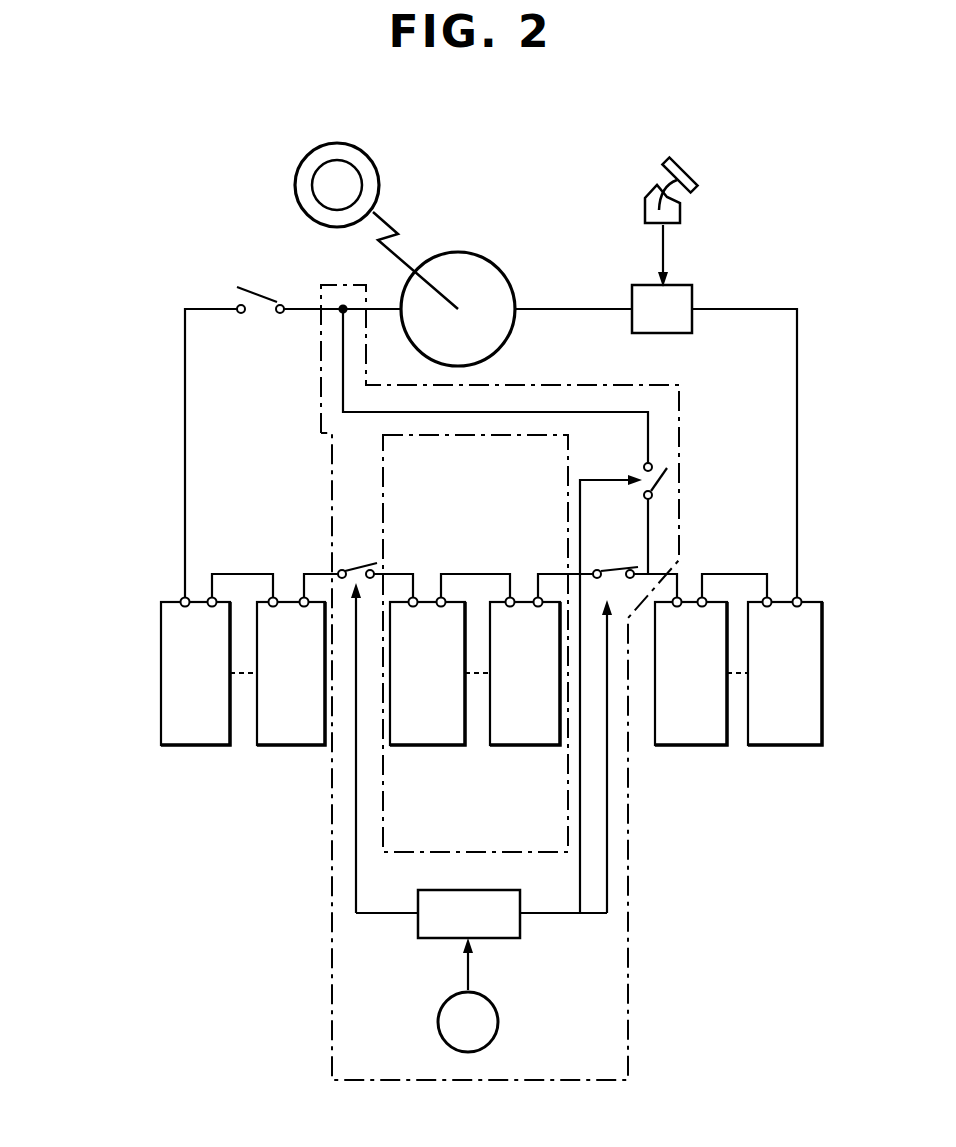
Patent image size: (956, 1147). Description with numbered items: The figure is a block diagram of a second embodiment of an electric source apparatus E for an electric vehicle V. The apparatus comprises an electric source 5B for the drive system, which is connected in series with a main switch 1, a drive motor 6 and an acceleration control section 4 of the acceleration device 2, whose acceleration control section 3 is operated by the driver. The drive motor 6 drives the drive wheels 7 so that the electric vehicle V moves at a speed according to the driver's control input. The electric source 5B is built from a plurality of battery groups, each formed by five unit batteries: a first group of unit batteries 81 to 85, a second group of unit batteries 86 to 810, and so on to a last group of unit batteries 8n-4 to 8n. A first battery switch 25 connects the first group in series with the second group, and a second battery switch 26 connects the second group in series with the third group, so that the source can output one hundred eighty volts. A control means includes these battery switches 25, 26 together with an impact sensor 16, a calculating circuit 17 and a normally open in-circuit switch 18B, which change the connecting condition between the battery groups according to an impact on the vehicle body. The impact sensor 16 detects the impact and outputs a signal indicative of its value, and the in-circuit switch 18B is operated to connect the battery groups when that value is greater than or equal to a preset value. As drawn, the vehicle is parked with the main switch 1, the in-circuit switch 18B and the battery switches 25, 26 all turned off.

The main switch 1 is at (263, 309).
The acceleration device 2 is at (748, 207).
The acceleration control section 3 is at (680, 218).
The acceleration control section 4 is at (692, 296).
The drive motor 6 is at (484, 252).
The drive wheels 7 is at (339, 143).
The electric vehicle V is at (190, 234).
The electric source apparatus E is at (158, 414).
The electric source 5B is at (150, 608).
The first battery switch 25 is at (358, 564).
The second battery switch 26 is at (616, 570).
The in-circuit switch 18B is at (668, 478).
The unit battery 81 is at (193, 745).
The unit battery 85 is at (293, 745).
The unit battery 86 is at (427, 745).
The unit battery 810 is at (527, 745).
The unit battery 8n-4 is at (690, 745).
The unit battery 8n is at (783, 745).
The calculating circuit 17 is at (508, 938).
The impact sensor 16 is at (499, 1030).